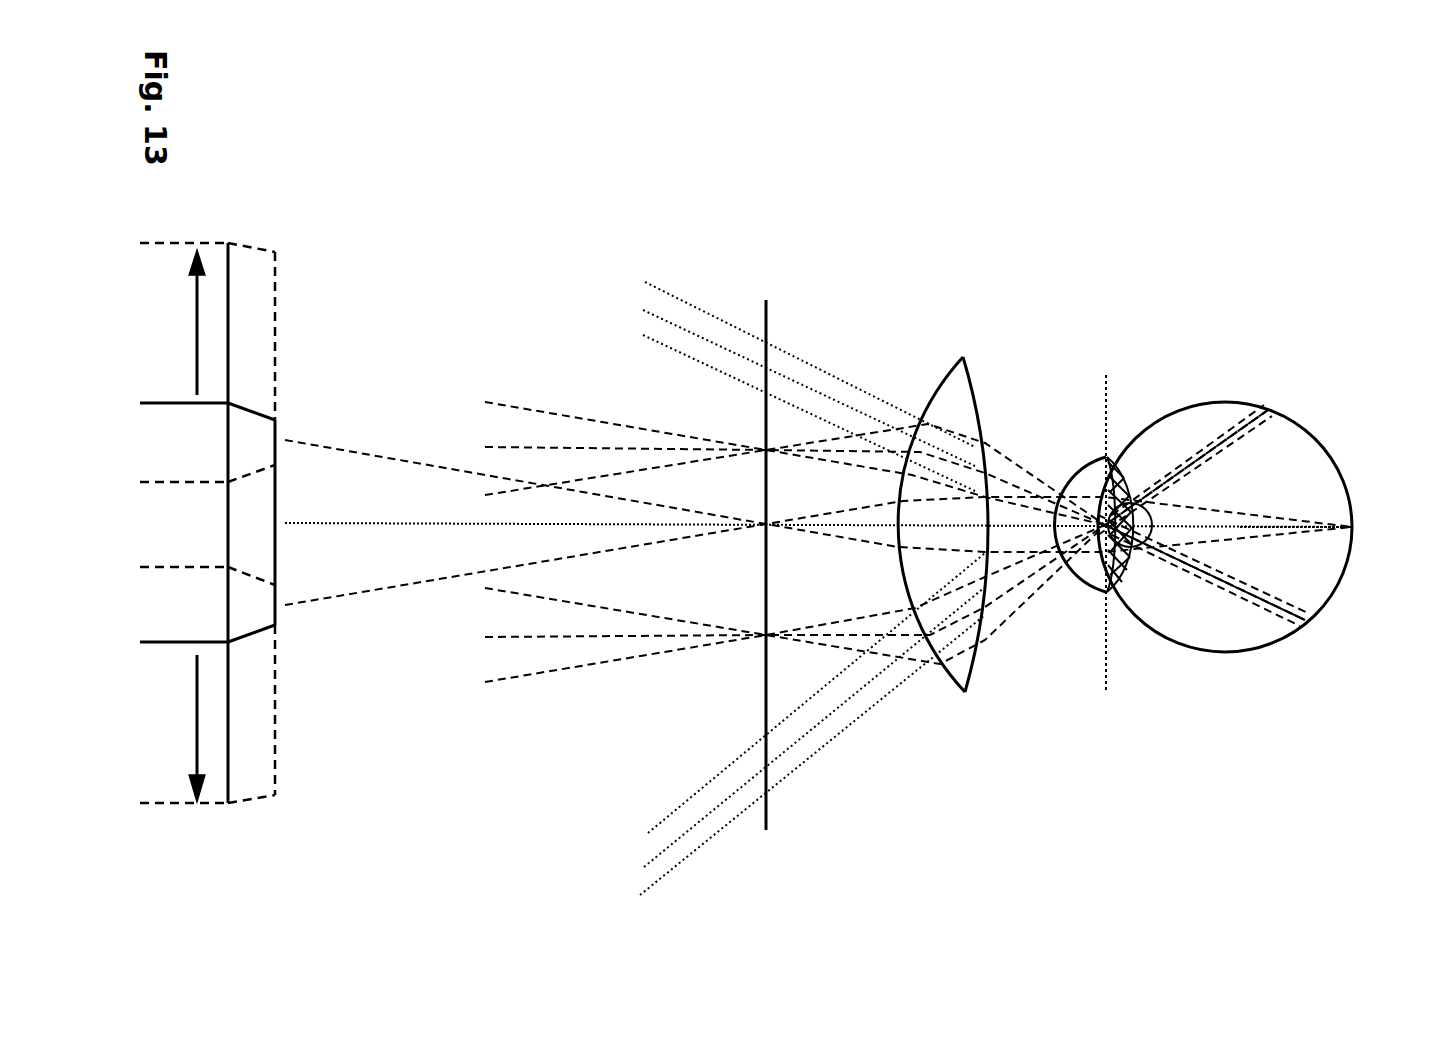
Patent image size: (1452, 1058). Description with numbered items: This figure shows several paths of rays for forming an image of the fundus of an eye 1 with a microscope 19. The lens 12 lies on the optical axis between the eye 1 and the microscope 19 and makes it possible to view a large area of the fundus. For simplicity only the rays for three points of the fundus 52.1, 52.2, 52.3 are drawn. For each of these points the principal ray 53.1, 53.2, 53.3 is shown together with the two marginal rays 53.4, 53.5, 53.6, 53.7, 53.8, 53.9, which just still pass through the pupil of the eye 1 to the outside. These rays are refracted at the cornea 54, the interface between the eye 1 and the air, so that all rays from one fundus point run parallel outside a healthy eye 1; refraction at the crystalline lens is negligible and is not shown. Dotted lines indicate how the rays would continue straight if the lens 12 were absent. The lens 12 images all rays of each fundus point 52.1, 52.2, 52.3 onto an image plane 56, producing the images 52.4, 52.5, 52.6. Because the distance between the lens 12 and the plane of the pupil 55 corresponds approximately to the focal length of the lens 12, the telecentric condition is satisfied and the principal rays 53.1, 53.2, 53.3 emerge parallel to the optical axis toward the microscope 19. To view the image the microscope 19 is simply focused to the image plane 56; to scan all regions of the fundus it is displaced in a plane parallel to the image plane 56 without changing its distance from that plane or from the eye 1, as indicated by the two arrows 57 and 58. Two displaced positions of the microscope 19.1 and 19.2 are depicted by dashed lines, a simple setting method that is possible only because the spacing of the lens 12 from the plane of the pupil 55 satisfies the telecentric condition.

The eye 1 is at (1324, 447).
The lens 12 is at (973, 386).
The microscope 19 is at (280, 504).
The displaced microscope 19.1 is at (280, 300).
The displaced microscope 19.2 is at (280, 716).
The point of the fundus 52.1 is at (1268, 412).
The point of the fundus 52.2 is at (1354, 530).
The point of the fundus 52.3 is at (1306, 622).
The image 52.4 is at (762, 631).
The image 52.5 is at (762, 520).
The image 52.6 is at (762, 446).
The principal ray 53.1 is at (1190, 462).
The principal ray 53.2 is at (1257, 532).
The principal ray 53.3 is at (1258, 552).
The marginal ray 53.4 is at (1170, 463).
The marginal ray 53.5 is at (1213, 442).
The marginal ray 53.6 is at (1284, 530).
The marginal ray 53.7 is at (1224, 538).
The marginal ray 53.8 is at (1225, 548).
The marginal ray 53.9 is at (1262, 590).
The cornea 54 is at (1082, 573).
The plane of the pupil 55 is at (1104, 384).
The image plane 56 is at (768, 320).
The arrow 57 is at (196, 324).
The arrow 58 is at (196, 714).